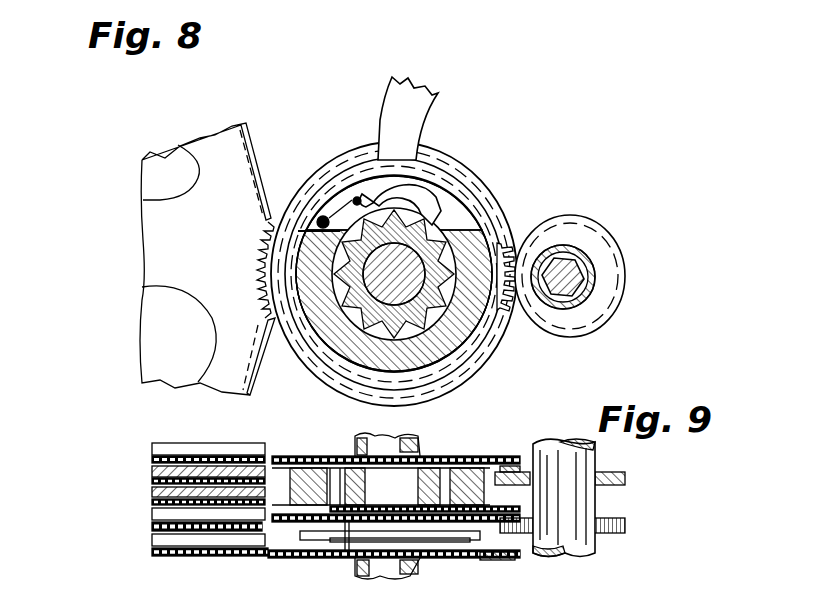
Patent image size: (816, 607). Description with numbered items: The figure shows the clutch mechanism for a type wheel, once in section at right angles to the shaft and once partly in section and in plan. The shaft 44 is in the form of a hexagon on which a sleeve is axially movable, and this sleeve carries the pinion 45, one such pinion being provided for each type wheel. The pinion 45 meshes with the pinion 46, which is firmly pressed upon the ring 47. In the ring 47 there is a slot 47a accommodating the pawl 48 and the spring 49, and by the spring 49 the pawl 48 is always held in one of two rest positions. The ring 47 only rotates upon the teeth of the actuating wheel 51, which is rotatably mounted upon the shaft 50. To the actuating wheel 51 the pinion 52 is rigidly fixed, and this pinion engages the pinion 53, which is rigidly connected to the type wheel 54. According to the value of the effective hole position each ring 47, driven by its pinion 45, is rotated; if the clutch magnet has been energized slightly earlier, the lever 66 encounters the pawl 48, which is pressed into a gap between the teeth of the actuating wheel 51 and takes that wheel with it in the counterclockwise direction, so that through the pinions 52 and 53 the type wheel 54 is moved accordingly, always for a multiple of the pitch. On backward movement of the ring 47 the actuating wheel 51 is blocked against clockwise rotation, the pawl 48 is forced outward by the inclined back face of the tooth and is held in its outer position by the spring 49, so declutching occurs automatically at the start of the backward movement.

In FIG. 8, the shaft 44 is at (598, 282).
In FIG. 9, the shaft 44 is at (573, 542).
In FIG. 8, the pinion 45 is at (585, 242).
In FIG. 9, the pinion 45 is at (626, 478).
In FIG. 8, the pinion 46 is at (526, 238).
In FIG. 9, the pinion 46 is at (498, 462).
In FIG. 8, the ring 47 is at (481, 317).
In FIG. 9, the ring 47 is at (444, 543).
In FIG. 8, the slot 47a is at (453, 210).
In FIG. 9, the slot 47a is at (471, 543).
In FIG. 8, the pawl 48 is at (410, 178).
In FIG. 8, the spring 49 is at (333, 210).
In FIG. 8, the shaft 50 is at (447, 357).
In FIG. 8, the actuating wheel 51 is at (348, 322).
In FIG. 9, the actuating wheel 51 is at (333, 465).
In FIG. 8, the pinion 52 is at (305, 180).
In FIG. 9, the pinion 52 is at (268, 505).
In FIG. 8, the pinion 53 is at (236, 358).
In FIG. 9, the pinion 53 is at (250, 560).
In FIG. 9, the type wheel 54 is at (152, 456).
In FIG. 8, the lever 66 is at (420, 102).